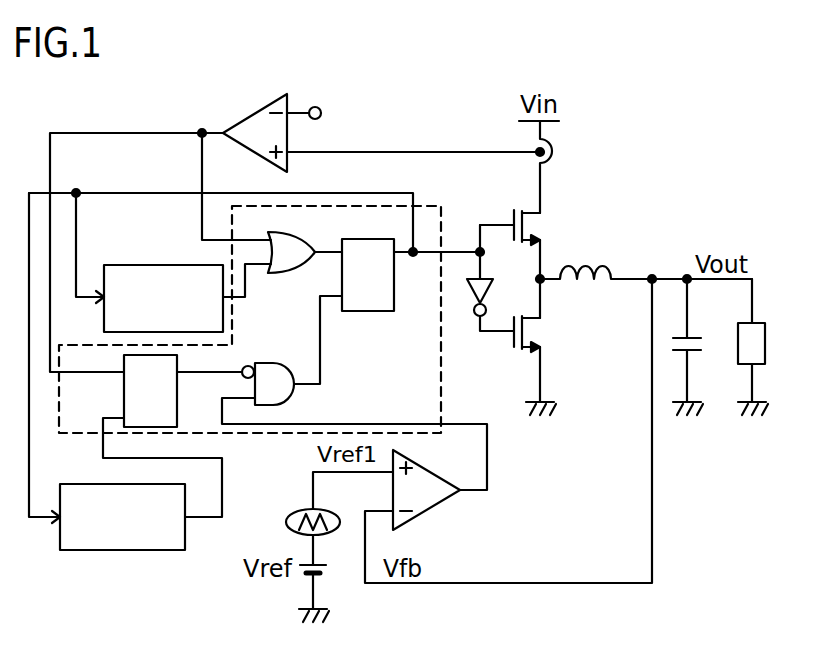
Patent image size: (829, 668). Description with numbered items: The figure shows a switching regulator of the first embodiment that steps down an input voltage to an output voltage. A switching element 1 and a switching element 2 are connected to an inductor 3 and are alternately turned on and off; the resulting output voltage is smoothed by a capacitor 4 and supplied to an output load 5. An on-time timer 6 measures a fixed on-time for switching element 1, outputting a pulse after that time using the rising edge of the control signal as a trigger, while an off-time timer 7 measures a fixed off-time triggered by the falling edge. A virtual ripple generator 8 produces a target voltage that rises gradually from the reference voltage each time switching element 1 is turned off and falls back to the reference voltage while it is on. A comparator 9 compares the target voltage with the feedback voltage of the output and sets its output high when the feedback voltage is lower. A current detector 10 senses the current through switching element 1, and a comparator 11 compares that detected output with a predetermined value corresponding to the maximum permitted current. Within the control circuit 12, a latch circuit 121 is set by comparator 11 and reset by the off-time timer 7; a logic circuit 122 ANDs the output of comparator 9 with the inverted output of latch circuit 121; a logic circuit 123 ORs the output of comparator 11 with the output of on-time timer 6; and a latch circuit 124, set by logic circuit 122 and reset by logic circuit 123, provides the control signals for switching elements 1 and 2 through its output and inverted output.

The switching element 1 is at (513, 218).
The switching element 2 is at (510, 343).
The inductor 3 is at (582, 262).
The capacitor 4 is at (691, 335).
The output load 5 is at (766, 335).
The on-time timer 6 is at (135, 265).
The off-time timer 7 is at (186, 540).
The virtual ripple generator 8 is at (304, 508).
The comparator 9 is at (432, 507).
The current detector 10 is at (552, 158).
The comparator 11 is at (290, 170).
The control circuit 12 is at (441, 380).
The latch circuit 121 is at (124, 395).
The logic circuit 122 is at (270, 364).
The logic circuit 123 is at (289, 236).
The latch circuit 124 is at (372, 311).